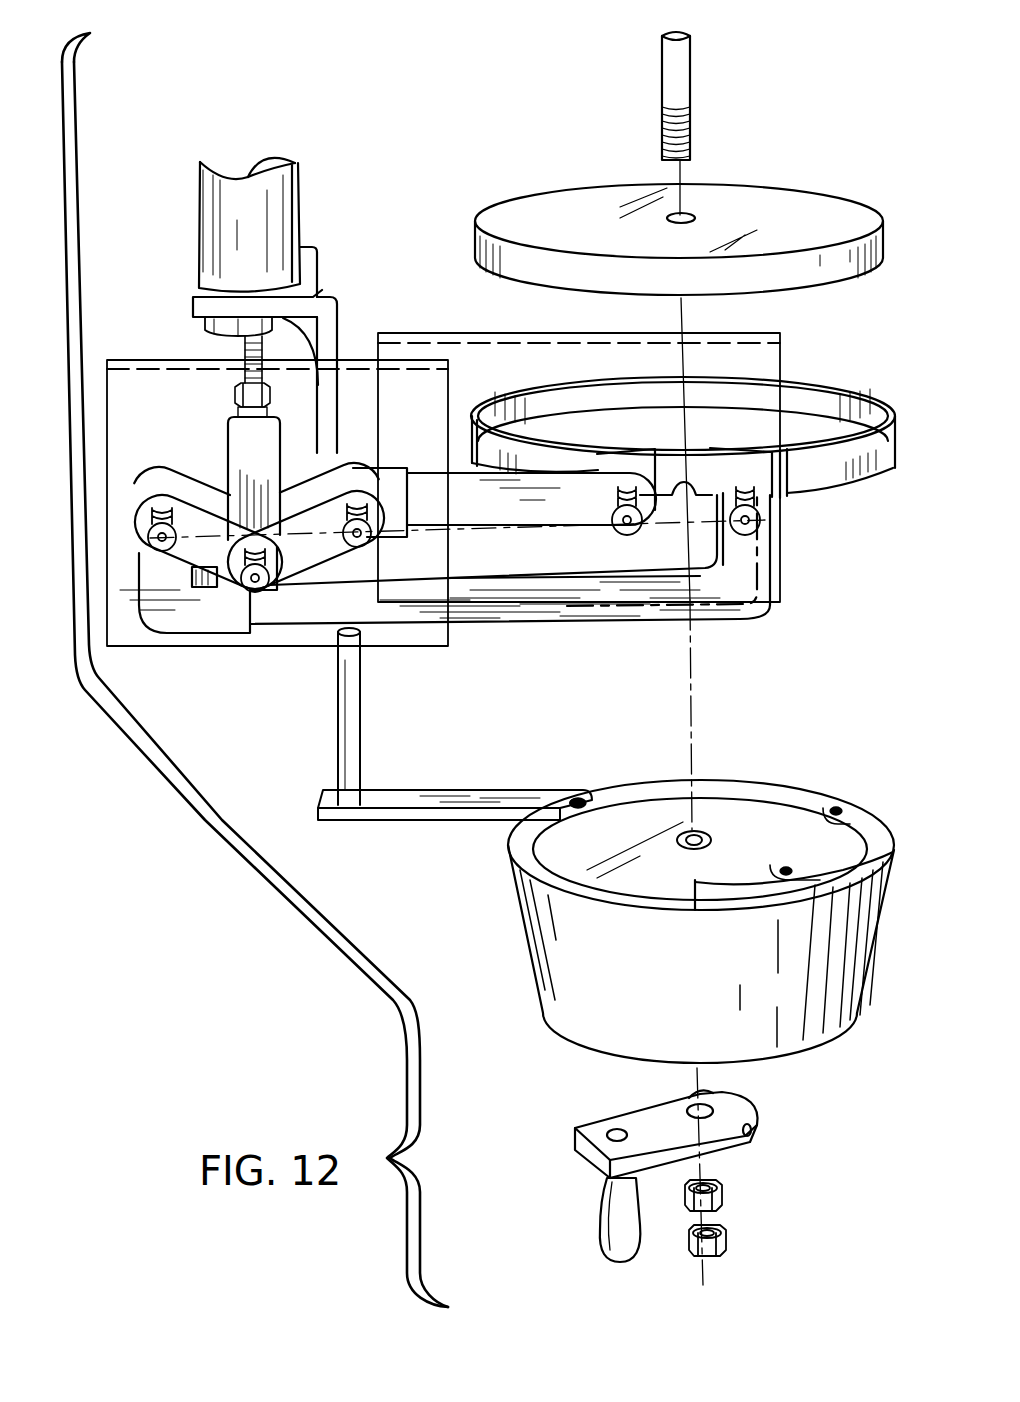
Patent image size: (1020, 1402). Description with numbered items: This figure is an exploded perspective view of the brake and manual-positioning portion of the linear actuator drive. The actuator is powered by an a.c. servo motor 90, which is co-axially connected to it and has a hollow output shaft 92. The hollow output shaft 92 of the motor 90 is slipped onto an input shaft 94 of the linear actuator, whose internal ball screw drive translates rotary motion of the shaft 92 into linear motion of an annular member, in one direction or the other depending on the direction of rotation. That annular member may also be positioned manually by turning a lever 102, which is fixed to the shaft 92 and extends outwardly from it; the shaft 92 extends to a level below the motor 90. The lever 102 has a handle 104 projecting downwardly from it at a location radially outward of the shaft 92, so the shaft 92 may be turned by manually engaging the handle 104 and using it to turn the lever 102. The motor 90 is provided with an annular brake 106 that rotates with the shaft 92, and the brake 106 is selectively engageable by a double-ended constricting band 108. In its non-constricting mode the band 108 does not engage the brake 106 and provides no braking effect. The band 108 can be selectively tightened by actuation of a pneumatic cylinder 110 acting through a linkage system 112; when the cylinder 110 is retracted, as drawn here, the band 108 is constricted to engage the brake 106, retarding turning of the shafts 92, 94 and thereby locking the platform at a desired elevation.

The a.c. servo motor 90 is at (540, 980).
The hollow output shaft 92 is at (692, 90).
The input shaft 94 is at (705, 832).
The lever 102 is at (735, 1143).
The handle 104 is at (612, 1205).
The annular brake 106 is at (780, 200).
The double-ended constricting band 108 is at (834, 478).
The pneumatic cylinder 110 is at (303, 200).
The linkage system 112 is at (273, 588).